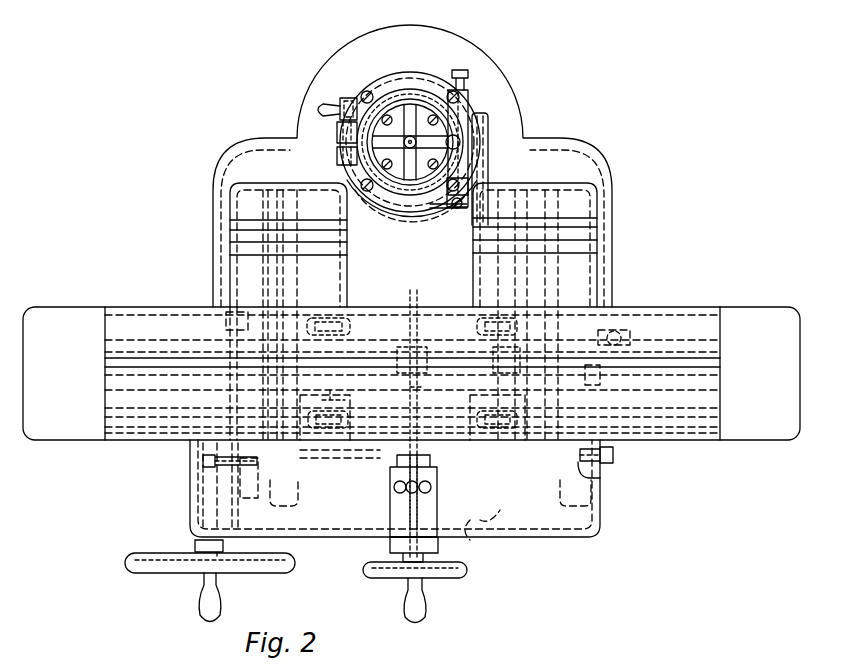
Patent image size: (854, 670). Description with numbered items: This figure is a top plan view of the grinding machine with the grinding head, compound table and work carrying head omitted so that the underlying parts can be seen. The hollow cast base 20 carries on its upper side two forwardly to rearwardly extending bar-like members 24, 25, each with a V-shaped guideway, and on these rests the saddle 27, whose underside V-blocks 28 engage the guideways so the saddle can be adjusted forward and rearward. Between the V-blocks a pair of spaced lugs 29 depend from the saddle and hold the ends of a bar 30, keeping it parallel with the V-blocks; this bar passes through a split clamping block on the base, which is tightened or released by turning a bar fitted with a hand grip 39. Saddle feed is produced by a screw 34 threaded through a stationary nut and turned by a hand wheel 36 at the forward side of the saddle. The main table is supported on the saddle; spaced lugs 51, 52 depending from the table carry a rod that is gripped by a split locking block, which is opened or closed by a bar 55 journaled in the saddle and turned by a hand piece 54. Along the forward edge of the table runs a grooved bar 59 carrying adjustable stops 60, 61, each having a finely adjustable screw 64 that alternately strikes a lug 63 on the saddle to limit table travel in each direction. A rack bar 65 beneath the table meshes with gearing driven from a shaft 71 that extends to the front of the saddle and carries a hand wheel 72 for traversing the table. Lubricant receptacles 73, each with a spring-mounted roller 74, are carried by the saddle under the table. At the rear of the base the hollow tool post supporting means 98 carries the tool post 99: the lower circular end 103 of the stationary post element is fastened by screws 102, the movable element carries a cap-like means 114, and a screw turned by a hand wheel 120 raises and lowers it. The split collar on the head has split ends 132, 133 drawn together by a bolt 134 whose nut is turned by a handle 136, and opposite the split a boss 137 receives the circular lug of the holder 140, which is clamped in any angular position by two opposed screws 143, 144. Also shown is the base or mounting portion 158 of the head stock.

The base 20 is at (564, 128).
The bar-like member 24 is at (560, 277).
The bar-like member 25 is at (230, 270).
The saddle 27 is at (610, 288).
The V-blocks 28 is at (615, 499).
The lugs 29 is at (533, 176).
The bar 30 is at (482, 530).
The screw 34 is at (430, 524).
The hand wheel 36 is at (450, 572).
The hand grip 39 is at (620, 334).
The lug 51 is at (226, 306).
The lug 52 is at (602, 385).
The hand piece 54 is at (432, 487).
The bar 55 is at (422, 389).
The grooved bar 59 is at (333, 452).
The stop 60 is at (250, 470).
The stop 61 is at (601, 478).
The lug 63 is at (396, 458).
The screw 64 is at (203, 460).
The rack bar 65 is at (332, 392).
The shaft 71 is at (205, 490).
The hand wheel 72 is at (180, 570).
The receptacles 73 is at (345, 312).
The roller 74 is at (315, 313).
The tool post supporting means 98 is at (494, 67).
The tool post 99 is at (435, 61).
The screws 102 is at (363, 93).
The lower circular end 103 is at (380, 83).
The cap-like means 114 is at (422, 117).
The hand wheel 120 is at (400, 93).
The split end 132 is at (337, 157).
The split end 133 is at (337, 127).
The bolt 134 is at (350, 99).
The handle 136 is at (320, 100).
The boss 137 is at (470, 94).
The holder 140 is at (502, 116).
The screw 143 is at (463, 73).
The screw 144 is at (455, 208).
The base or mounting portion 158 is at (430, 328).